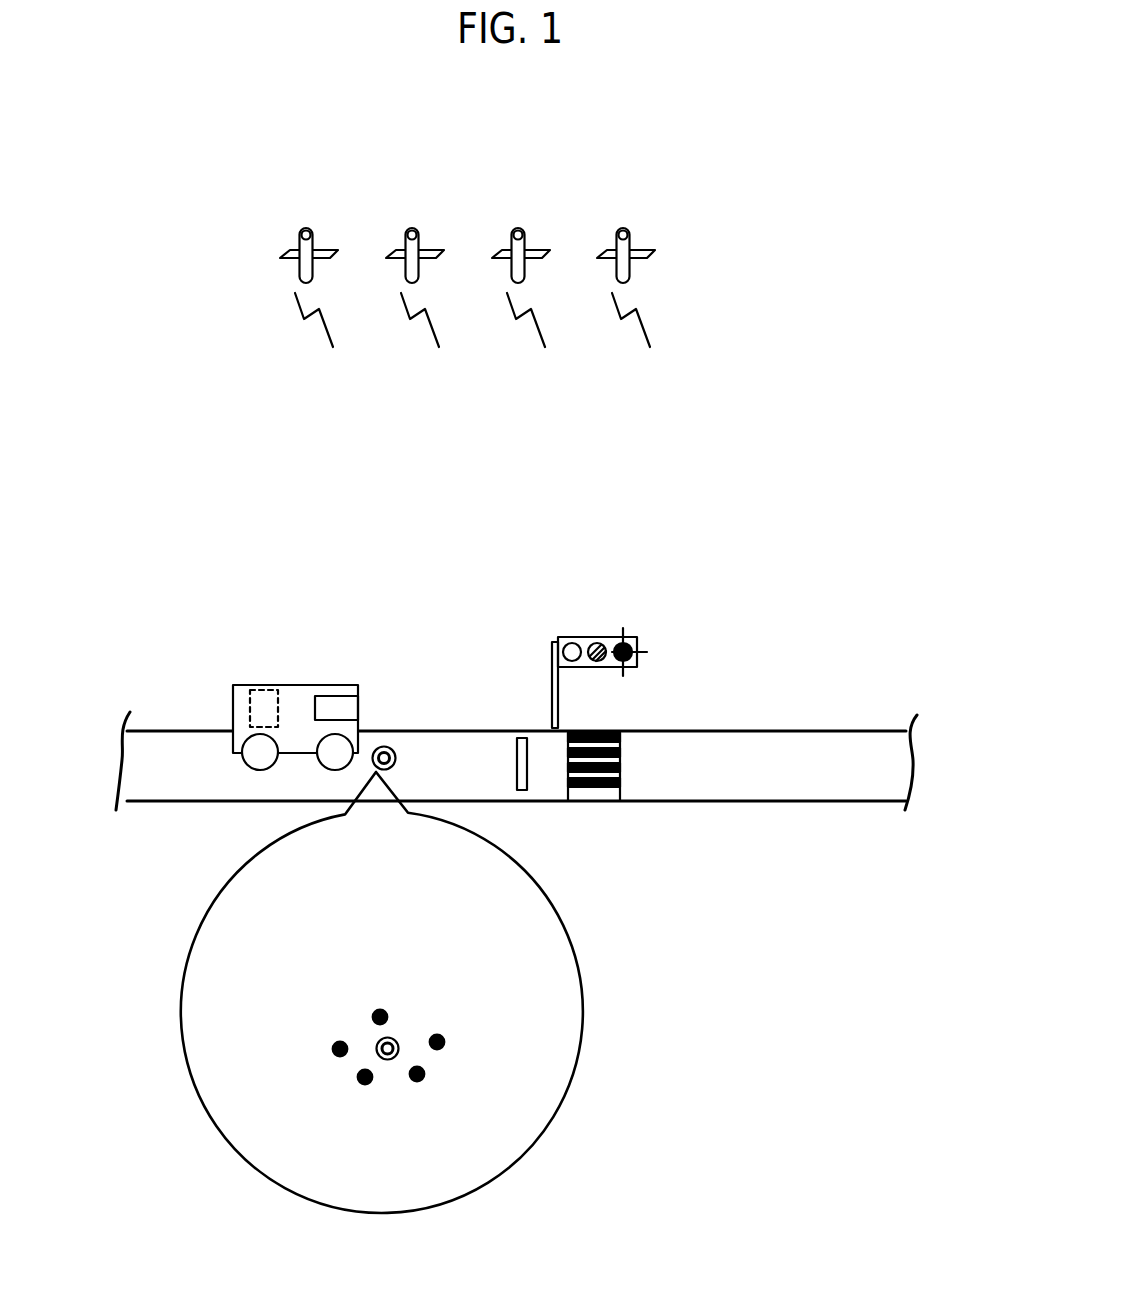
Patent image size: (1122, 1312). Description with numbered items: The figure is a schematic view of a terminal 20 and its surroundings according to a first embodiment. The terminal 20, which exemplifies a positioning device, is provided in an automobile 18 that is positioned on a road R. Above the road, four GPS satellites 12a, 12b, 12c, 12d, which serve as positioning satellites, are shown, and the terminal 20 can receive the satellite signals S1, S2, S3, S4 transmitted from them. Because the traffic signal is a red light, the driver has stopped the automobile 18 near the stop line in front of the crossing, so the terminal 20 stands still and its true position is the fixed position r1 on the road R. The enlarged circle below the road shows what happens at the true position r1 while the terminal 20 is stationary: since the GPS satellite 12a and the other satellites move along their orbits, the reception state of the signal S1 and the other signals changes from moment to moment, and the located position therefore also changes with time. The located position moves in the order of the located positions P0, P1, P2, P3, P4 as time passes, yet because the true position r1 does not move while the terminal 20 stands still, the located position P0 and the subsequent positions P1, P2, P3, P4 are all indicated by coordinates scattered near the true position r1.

The GPS satellite 12a is at (305, 228).
The GPS satellite 12b is at (412, 228).
The GPS satellite 12c is at (518, 228).
The GPS satellite 12d is at (623, 228).
The signal S1 is at (304, 319).
The signal S2 is at (410, 319).
The signal S3 is at (516, 319).
The signal S4 is at (621, 319).
The automobile 18 is at (308, 685).
The terminal 20 is at (264, 690).
The road R is at (180, 801).
The true position r1 is at (393, 1037).
The located position P0 is at (365, 1084).
The located position P1 is at (422, 1077).
The located position P2 is at (335, 1046).
The located position P3 is at (375, 1013).
The located position P4 is at (443, 1040).